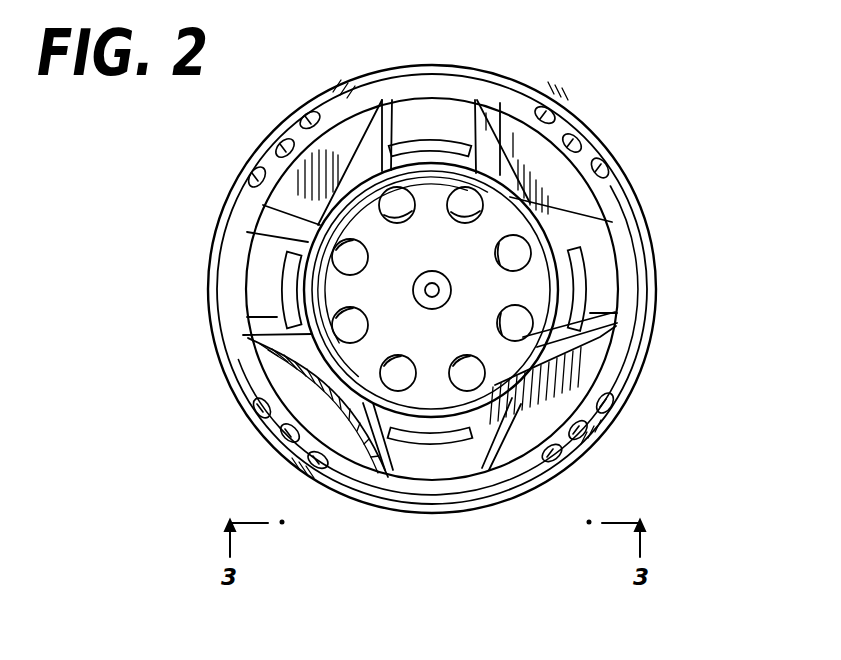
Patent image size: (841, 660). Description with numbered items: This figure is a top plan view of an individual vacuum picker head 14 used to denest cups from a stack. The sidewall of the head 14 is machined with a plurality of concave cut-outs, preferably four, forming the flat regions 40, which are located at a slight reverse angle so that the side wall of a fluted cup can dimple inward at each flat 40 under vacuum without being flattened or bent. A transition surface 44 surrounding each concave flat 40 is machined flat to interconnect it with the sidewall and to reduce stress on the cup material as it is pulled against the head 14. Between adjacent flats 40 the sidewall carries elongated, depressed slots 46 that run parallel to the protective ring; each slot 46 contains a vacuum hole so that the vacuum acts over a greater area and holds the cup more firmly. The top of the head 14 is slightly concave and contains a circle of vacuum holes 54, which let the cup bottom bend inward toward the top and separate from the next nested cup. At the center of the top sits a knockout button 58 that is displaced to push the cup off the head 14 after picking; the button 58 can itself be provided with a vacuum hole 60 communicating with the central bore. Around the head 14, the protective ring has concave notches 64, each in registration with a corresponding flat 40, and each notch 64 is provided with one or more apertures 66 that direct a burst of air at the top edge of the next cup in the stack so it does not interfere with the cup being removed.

The picker head 14 is at (695, 173).
The flat region 40 is at (513, 190).
The transition surface 44 is at (290, 226).
The slot 46 is at (582, 290).
The vacuum hole 54 is at (396, 200).
The knockout button 58 is at (428, 276).
The vacuum hole 60 is at (436, 295).
The notch 64 is at (250, 407).
The aperture 66 is at (552, 115).